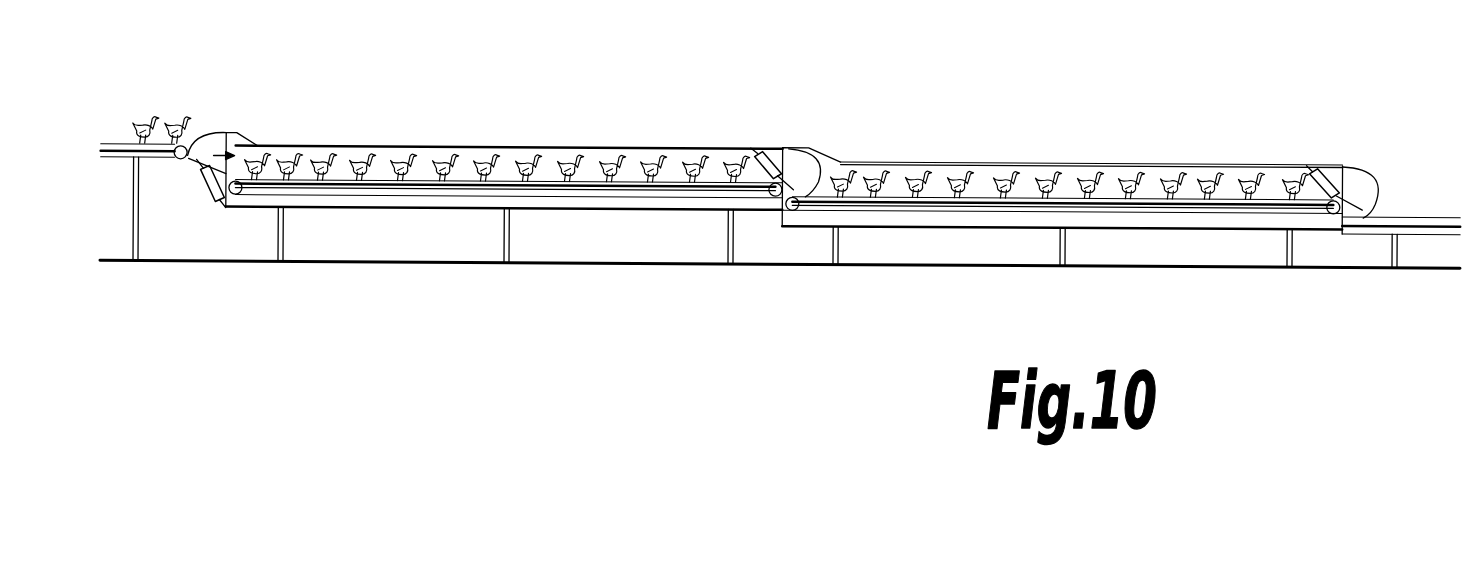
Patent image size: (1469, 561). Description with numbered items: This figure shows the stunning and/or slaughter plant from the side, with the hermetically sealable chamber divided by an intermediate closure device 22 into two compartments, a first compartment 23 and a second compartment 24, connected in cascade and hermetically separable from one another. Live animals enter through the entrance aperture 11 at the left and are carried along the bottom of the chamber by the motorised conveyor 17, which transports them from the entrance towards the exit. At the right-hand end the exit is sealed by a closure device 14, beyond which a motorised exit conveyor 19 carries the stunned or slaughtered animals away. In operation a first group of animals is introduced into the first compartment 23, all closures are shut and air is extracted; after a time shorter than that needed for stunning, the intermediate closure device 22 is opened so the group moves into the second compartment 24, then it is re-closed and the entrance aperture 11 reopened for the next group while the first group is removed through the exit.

The entrance aperture 11 is at (213, 154).
The first compartment 23 is at (493, 141).
The motorised conveyor 17 is at (612, 192).
The intermediate closure device 22 is at (798, 163).
The second compartment 24 is at (1068, 160).
The closure device 14 is at (1362, 183).
The motorised exit conveyor 19 is at (1405, 210).